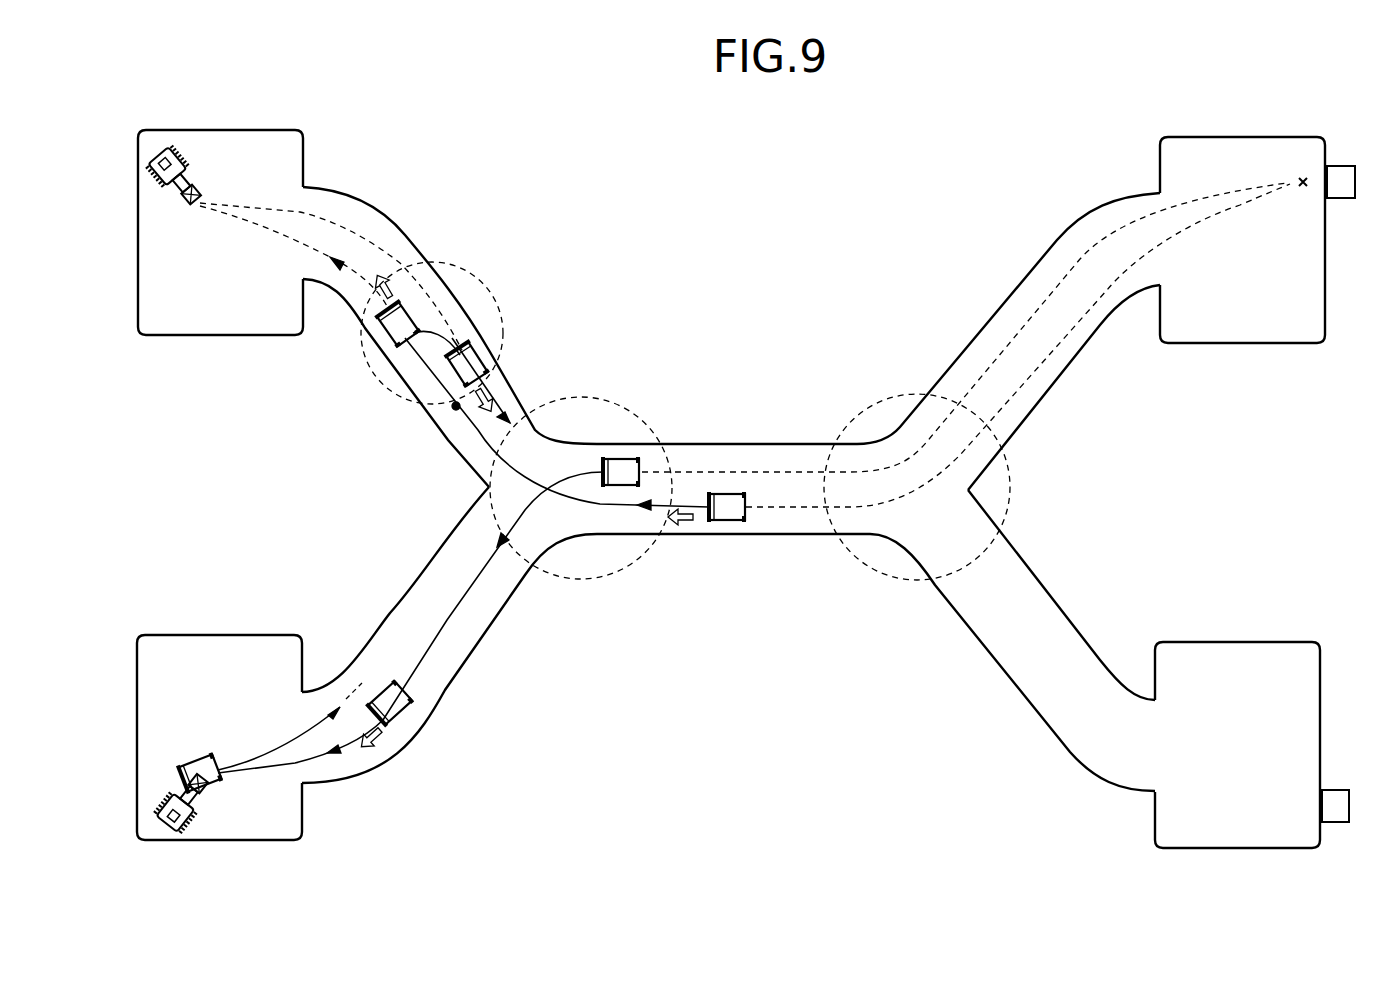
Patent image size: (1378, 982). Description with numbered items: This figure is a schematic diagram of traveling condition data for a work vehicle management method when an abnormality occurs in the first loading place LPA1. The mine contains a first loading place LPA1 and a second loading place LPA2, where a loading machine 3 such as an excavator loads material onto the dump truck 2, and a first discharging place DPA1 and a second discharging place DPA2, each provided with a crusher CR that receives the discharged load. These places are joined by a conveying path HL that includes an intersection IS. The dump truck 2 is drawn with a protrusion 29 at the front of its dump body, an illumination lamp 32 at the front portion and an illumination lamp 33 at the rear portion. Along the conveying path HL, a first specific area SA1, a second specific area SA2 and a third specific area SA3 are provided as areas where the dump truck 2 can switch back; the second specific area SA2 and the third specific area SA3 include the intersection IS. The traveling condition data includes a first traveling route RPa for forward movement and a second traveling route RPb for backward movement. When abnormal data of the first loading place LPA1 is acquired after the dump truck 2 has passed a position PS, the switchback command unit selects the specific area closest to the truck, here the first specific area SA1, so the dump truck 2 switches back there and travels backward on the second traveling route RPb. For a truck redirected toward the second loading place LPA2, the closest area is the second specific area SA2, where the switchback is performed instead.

The dump truck 2 is at (483, 347).
The loading machine 3 is at (160, 152).
The protrusion 29 is at (477, 353).
The illumination lamp 32 is at (460, 343).
The illumination lamp 33 is at (493, 373).
The first loading place LPA1 is at (233, 130).
The second loading place LPA2 is at (232, 635).
The first discharging place DPA1 is at (1268, 137).
The second discharging place DPA2 is at (1265, 642).
The crusher CR is at (1343, 166).
The conveying path HL is at (772, 444).
The intersection IS is at (580, 433).
The first specific area SA1 is at (462, 262).
The second specific area SA2 is at (563, 579).
The third specific area SA3 is at (882, 582).
The position PS is at (452, 408).
The first traveling route RPa is at (480, 450).
The second traveling route RPb is at (534, 432).